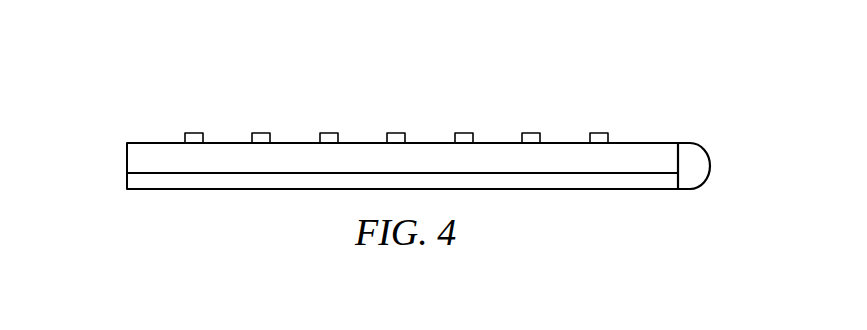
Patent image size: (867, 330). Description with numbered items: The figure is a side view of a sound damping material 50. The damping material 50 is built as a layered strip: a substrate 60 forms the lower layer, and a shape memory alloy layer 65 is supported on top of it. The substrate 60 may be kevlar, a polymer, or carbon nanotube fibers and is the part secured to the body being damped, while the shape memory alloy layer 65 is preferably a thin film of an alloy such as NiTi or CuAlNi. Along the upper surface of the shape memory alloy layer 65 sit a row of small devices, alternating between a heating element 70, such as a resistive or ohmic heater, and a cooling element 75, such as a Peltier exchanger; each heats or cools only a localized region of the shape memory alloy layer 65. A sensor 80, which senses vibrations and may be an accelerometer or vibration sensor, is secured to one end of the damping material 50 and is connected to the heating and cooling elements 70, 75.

The damping material 50 is at (117, 123).
The substrate 60 is at (176, 189).
The shape memory alloy layer 65 is at (647, 142).
The heating element 70 is at (192, 132).
The cooling element 75 is at (259, 132).
The sensor 80 is at (705, 146).